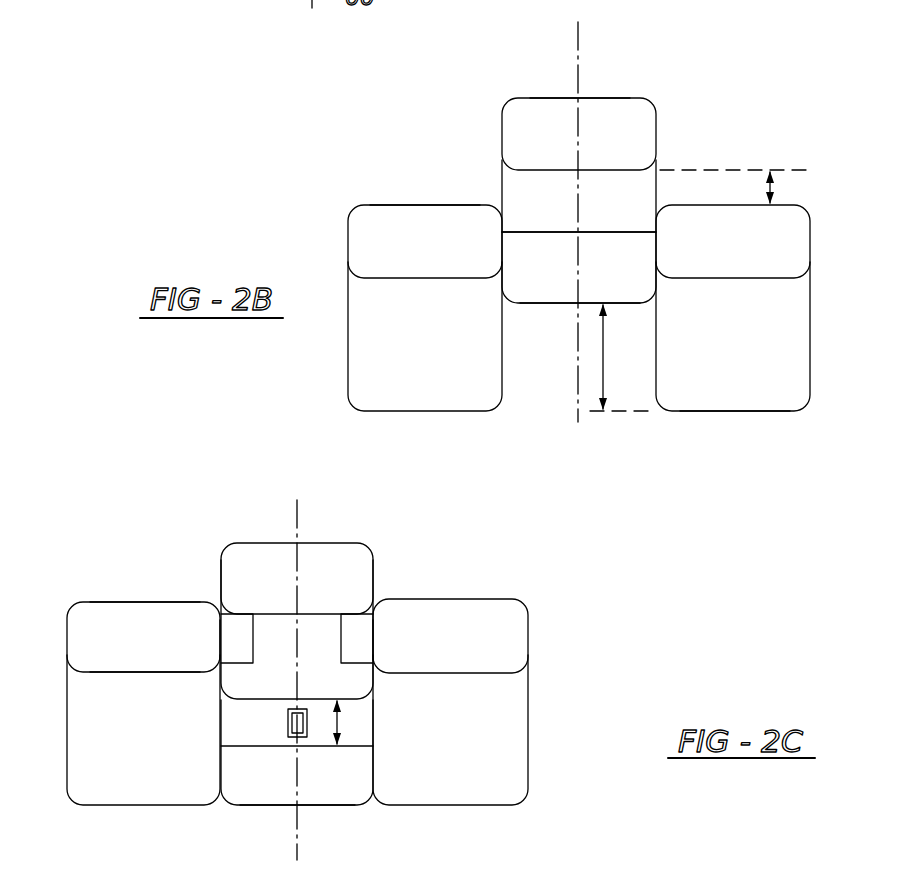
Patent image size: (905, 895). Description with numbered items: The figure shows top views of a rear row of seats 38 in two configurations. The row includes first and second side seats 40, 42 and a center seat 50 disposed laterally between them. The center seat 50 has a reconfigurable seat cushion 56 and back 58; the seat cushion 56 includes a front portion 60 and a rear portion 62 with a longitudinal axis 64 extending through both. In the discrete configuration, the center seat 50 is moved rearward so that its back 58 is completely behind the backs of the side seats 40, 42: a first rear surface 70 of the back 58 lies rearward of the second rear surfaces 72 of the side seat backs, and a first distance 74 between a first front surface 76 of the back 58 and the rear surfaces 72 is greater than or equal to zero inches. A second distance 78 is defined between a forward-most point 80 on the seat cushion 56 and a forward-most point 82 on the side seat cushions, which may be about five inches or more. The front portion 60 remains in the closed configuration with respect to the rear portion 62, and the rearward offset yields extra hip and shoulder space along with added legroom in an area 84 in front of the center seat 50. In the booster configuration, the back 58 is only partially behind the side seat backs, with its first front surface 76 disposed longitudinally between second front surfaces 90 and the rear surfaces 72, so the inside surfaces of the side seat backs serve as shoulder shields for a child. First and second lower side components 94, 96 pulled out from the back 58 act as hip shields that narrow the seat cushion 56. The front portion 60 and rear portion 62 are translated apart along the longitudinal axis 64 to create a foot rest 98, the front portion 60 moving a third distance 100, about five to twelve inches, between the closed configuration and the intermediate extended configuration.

In FIG. 2B, the rear row of seats 38 is at (794, 92).
In FIG. 2C, the rear row of seats 38 is at (140, 485).
In FIG. 2B, the first side seat 40 is at (809, 210).
In FIG. 2C, the first side seat 40 is at (529, 605).
In FIG. 2B, the second side seat 42 is at (350, 215).
In FIG. 2C, the second side seat 42 is at (70, 599).
In FIG. 2B, the center seat 50 is at (657, 97).
In FIG. 2C, the center seat 50 is at (373, 543).
In FIG. 2B, the seat cushion 56 is at (624, 188).
In FIG. 2C, the seat cushion 56 is at (243, 790).
In FIG. 2B, the back 58 is at (525, 117).
In FIG. 2C, the back 58 is at (283, 556).
In FIG. 2B, the front portion 60 is at (522, 279).
In FIG. 2C, the front portion 60 is at (353, 793).
In FIG. 2B, the rear portion 62 is at (532, 200).
In FIG. 2C, the rear portion 62 is at (356, 680).
In FIG. 2B, the longitudinal axis 64 is at (583, 62).
In FIG. 2C, the longitudinal axis 64 is at (300, 515).
In FIG. 2B, the first rear surface 70 is at (628, 97).
In FIG. 2B, the second rear surfaces 72 is at (388, 204).
In FIG. 2C, the second rear surfaces 72 is at (104, 601).
In FIG. 2B, the first distance 74 is at (775, 188).
In FIG. 2B, the first front surface 76 is at (535, 172).
In FIG. 2C, the first front surface 76 is at (268, 622).
In FIG. 2B, the second distance 78 is at (605, 338).
In FIG. 2B, the forward-most point 80 is at (542, 310).
In FIG. 2B, the forward-most point 82 is at (765, 411).
In FIG. 2B, the area 84 is at (547, 390).
In FIG. 2C, the second front surfaces 90 is at (176, 673).
In FIG. 2C, the first lower side component 94 is at (360, 627).
In FIG. 2C, the second lower side component 96 is at (233, 648).
In FIG. 2C, the foot rest 98 is at (242, 720).
In FIG. 2C, the third distance 100 is at (340, 722).